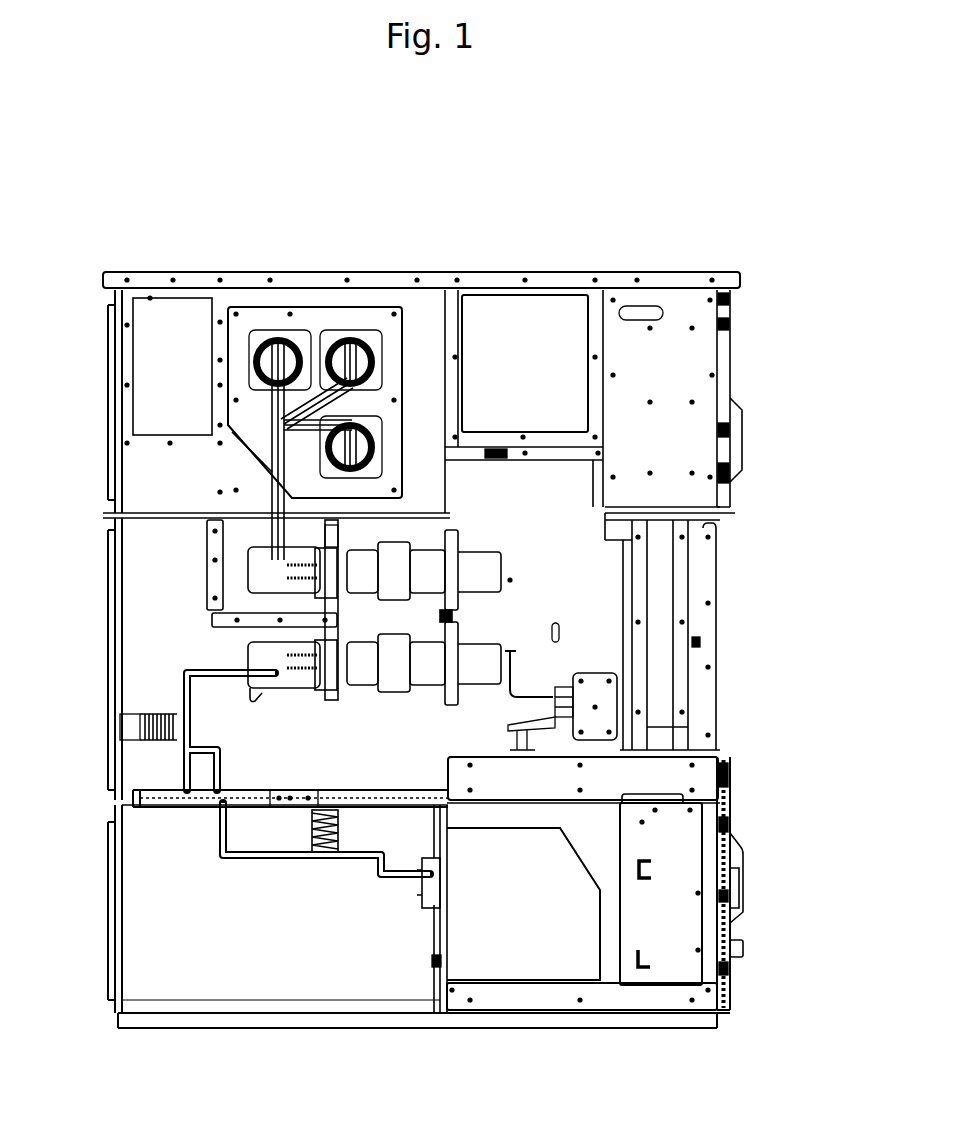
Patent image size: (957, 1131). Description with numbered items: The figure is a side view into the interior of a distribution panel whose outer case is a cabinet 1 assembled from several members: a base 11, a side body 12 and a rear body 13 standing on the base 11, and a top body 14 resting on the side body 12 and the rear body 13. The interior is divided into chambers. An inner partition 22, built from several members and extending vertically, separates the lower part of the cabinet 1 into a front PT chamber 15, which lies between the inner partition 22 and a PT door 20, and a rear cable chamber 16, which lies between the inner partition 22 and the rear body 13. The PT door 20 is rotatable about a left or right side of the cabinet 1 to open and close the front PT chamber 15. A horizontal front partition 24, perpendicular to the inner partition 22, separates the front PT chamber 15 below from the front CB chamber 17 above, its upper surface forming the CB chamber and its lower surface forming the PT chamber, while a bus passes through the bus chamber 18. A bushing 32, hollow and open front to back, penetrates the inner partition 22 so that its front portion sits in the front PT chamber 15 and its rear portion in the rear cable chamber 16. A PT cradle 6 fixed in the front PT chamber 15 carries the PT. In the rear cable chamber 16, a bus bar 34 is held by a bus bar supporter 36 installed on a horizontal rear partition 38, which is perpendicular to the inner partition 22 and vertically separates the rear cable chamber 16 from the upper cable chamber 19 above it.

The cabinet 1 is at (704, 244).
The PT cradle 6 is at (558, 952).
The base 11 is at (672, 1018).
The side body 12 is at (168, 997).
The rear body 13 is at (110, 852).
The top body 14 is at (436, 292).
The front PT chamber 15 is at (585, 831).
The rear cable chamber 16 is at (328, 972).
The front CB chamber 17 is at (560, 512).
The bus chamber 18 is at (300, 296).
The upper cable chamber 19 is at (148, 682).
The PT door 20 is at (740, 918).
The inner partition 22 is at (421, 952).
The front partition 24 is at (678, 773).
The bushing 32 is at (440, 882).
The bus bar 34 is at (236, 858).
The bus bar supporter 36 is at (305, 830).
The rear partition 38 is at (160, 792).